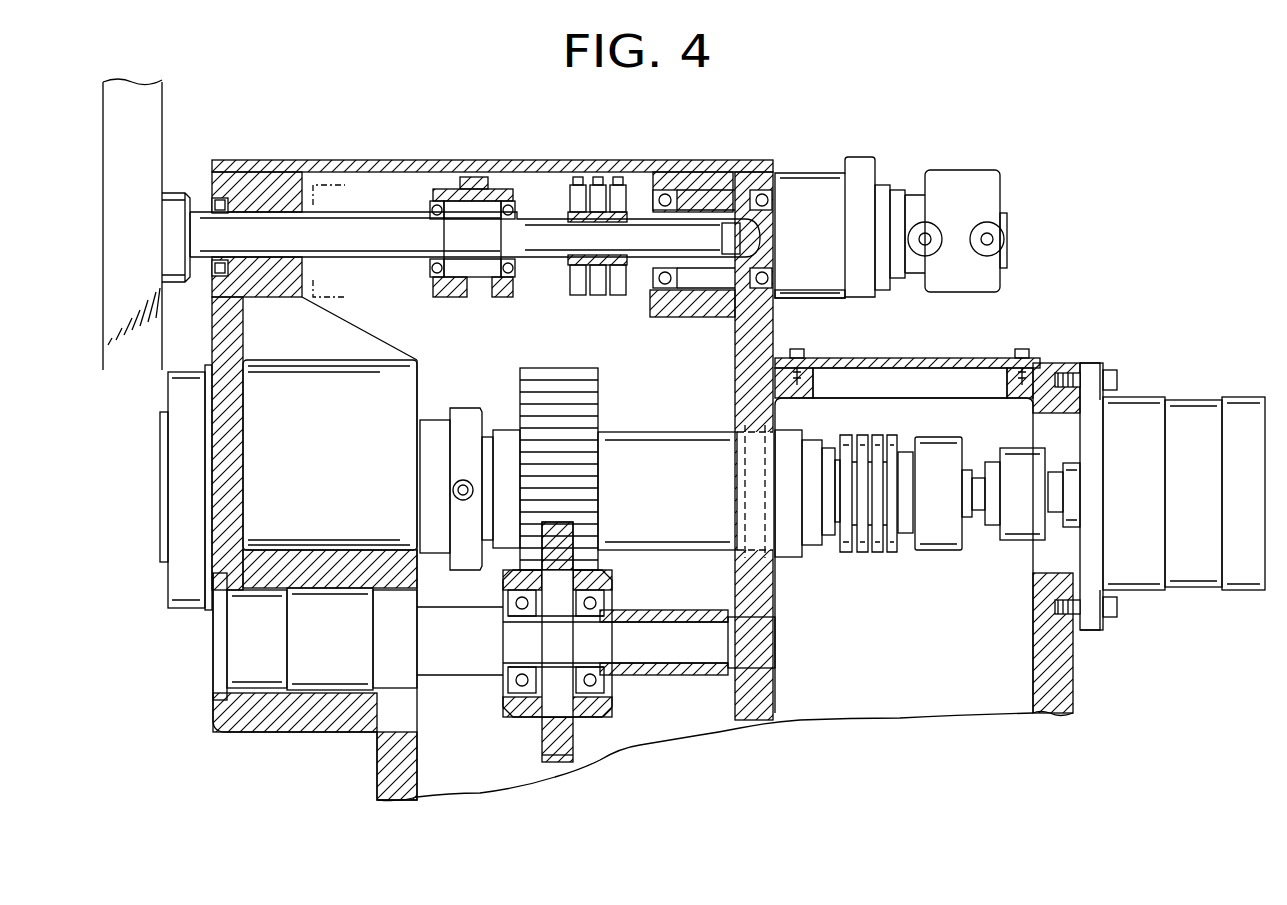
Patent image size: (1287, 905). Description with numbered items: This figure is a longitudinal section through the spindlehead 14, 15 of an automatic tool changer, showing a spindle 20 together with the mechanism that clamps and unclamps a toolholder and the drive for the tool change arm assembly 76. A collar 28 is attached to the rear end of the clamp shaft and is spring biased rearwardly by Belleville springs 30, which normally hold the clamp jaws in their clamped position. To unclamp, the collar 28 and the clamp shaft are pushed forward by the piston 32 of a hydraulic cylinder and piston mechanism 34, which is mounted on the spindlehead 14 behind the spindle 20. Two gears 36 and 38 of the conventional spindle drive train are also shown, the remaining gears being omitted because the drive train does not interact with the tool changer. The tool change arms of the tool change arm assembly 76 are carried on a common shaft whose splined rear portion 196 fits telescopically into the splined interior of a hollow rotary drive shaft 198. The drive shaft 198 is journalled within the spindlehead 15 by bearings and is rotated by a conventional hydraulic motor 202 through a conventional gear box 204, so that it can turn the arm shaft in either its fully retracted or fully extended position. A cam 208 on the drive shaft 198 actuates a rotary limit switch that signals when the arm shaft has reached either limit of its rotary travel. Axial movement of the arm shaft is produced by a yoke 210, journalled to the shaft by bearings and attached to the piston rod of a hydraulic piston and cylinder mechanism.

The spindlehead 14 is at (1057, 670).
The spindlehead 15 is at (325, 160).
The spindle 20 is at (180, 590).
The collar 28 is at (905, 540).
The Belleville springs 30 is at (862, 555).
The piston 32 is at (1054, 470).
The hydraulic cylinder and piston mechanism 34 is at (1188, 420).
The gear 36 is at (590, 406).
The gear 38 is at (537, 720).
The tool change arm assembly 76 is at (155, 134).
The splined rear portion 196 is at (546, 245).
The hollow rotary drive shaft 198 is at (766, 241).
The hydraulic motor 202 is at (985, 185).
The gear box 204 is at (825, 292).
The cam 208 is at (594, 290).
The yoke 210 is at (470, 185).